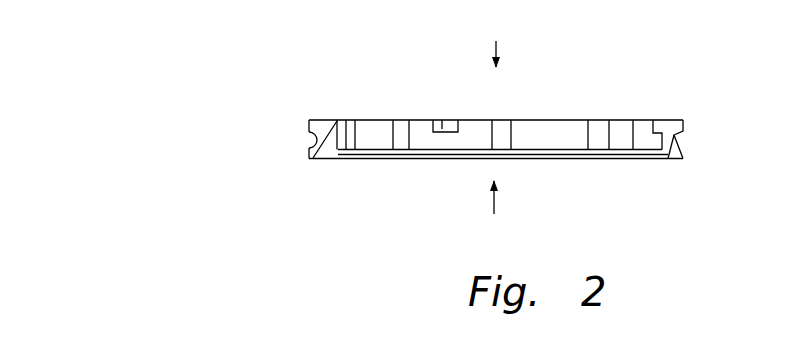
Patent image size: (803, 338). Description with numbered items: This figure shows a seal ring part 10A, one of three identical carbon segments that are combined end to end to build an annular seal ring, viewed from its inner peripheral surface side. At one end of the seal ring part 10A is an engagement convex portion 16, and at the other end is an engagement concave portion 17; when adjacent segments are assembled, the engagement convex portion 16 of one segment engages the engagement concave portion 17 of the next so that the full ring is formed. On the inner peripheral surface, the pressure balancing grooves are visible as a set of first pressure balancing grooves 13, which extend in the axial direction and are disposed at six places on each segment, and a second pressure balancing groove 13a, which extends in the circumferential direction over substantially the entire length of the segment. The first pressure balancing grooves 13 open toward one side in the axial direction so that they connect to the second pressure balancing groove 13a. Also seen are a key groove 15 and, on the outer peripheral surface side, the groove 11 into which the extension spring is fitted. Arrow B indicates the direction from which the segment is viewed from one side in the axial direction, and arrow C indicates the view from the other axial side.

The seal ring part 10A is at (717, 66).
The groove 11 is at (309, 139).
The first pressure balancing grooves 13 is at (350, 133).
The second pressure balancing groove 13a is at (424, 150).
The key grooves 15 is at (450, 123).
The engagement convex portion 16 is at (678, 147).
The engagement concave portion 17 is at (331, 151).
The arrow B is at (505, 54).
The arrow C is at (504, 197).